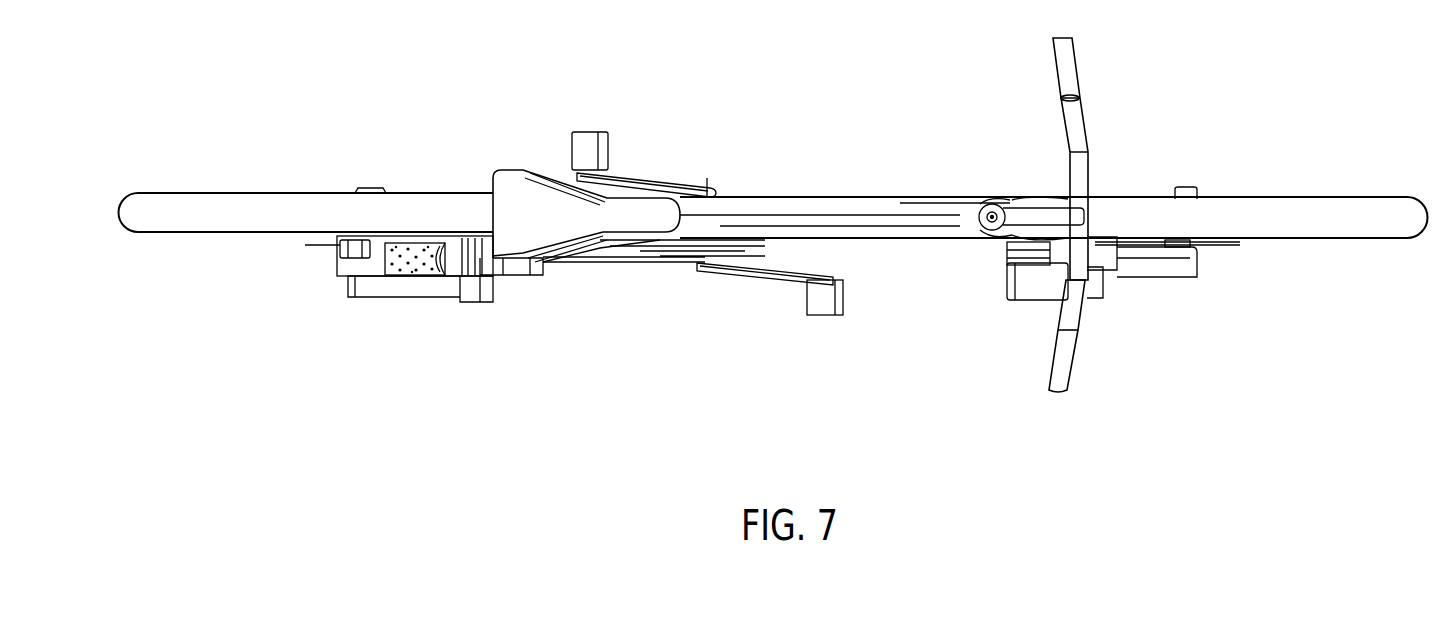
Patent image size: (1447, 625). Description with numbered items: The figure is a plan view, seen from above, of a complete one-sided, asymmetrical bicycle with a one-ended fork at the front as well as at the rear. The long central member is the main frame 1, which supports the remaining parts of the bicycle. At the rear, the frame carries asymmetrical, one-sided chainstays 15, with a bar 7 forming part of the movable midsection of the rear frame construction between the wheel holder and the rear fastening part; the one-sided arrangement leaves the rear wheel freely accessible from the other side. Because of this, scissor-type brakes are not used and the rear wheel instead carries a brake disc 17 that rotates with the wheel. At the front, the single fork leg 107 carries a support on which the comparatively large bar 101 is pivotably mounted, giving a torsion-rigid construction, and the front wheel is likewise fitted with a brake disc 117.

The main frame 1 is at (855, 187).
The bar 7 is at (433, 290).
The chainstays 15 is at (612, 268).
The brake disc 17 is at (330, 247).
The bar 101 is at (1057, 298).
The fork leg 107 is at (1148, 280).
The brake disc 117 is at (1227, 243).